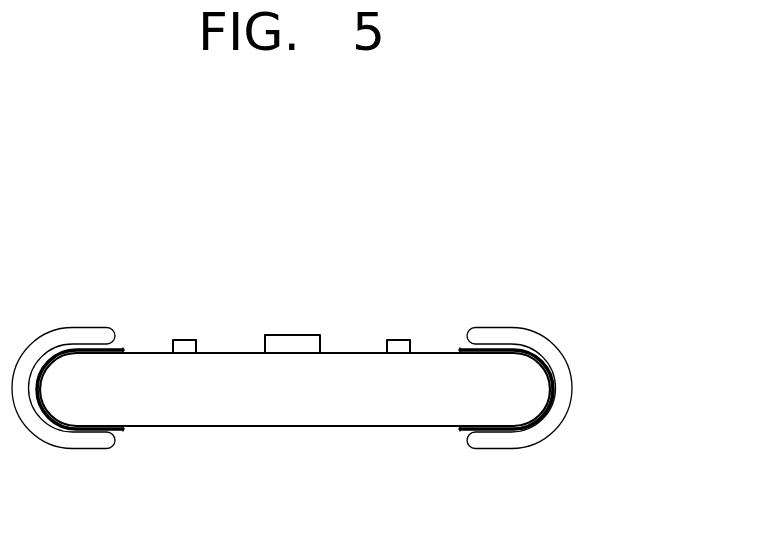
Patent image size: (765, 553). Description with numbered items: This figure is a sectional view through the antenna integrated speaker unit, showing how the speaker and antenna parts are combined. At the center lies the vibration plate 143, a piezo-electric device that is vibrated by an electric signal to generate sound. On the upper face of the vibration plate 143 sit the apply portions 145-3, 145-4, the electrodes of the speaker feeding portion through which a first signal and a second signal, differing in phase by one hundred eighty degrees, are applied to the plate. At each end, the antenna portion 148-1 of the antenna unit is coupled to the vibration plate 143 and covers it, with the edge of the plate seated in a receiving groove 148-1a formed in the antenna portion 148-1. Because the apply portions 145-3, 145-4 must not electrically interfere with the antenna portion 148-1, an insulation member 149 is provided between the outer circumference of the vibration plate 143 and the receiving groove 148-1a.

The vibration plate 143 is at (196, 403).
The apply portion 145-3 is at (292, 345).
The apply portion 145-4 is at (400, 342).
The antenna portion 148-1 is at (561, 417).
The receiving groove 148-1a is at (554, 386).
The insulation member 149 is at (518, 347).